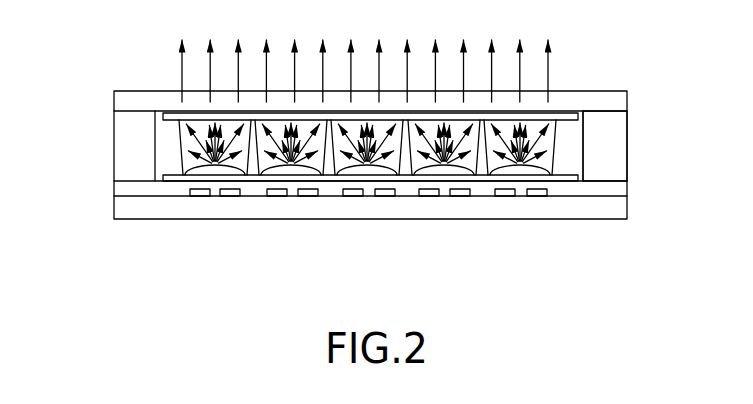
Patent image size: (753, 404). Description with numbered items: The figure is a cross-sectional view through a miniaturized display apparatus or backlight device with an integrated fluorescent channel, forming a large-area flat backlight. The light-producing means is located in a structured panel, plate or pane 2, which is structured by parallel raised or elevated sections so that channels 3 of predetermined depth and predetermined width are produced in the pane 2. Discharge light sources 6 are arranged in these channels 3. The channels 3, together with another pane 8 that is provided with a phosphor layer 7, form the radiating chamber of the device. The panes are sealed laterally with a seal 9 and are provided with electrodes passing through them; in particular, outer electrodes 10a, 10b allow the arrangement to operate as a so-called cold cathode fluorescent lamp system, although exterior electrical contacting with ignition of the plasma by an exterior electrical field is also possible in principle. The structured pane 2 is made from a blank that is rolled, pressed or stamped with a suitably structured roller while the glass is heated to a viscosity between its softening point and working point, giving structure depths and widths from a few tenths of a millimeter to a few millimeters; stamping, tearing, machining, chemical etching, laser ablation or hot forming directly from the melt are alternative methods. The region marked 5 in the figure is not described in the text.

The structured pane 2 is at (120, 187).
The channels 3 is at (167, 140).
The partition wall 5 is at (487, 130).
The discharge light sources 6 is at (530, 170).
The phosphor layer 7 is at (578, 112).
The pane 8 is at (127, 103).
The seal 9 is at (615, 148).
The outer electrode 10a is at (198, 200).
The outer electrode 10b is at (232, 200).